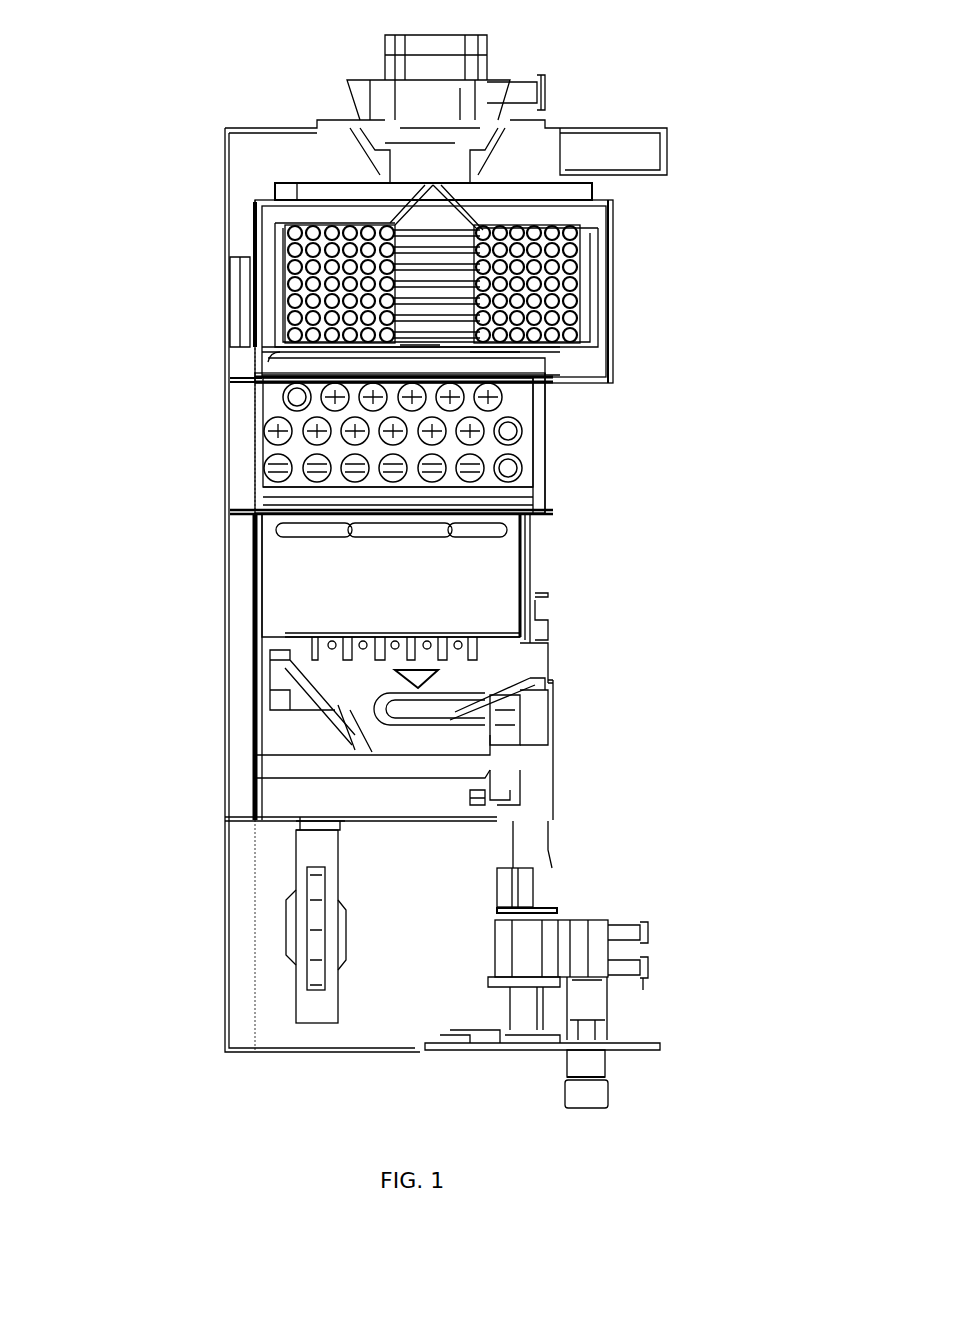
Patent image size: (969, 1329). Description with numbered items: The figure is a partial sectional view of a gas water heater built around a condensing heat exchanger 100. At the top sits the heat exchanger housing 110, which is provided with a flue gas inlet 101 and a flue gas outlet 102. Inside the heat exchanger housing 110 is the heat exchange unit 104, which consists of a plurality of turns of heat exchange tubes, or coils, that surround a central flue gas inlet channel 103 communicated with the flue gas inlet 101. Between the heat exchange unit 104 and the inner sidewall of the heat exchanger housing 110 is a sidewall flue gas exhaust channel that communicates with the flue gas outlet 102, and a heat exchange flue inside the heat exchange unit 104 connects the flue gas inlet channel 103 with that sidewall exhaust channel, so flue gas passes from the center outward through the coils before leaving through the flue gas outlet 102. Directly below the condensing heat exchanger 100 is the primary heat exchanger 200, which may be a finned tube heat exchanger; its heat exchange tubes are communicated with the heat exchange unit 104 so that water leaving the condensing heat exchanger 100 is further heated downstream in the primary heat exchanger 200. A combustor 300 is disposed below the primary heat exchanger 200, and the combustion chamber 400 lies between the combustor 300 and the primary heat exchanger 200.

The condensing heat exchanger 100 is at (438, 298).
The flue gas inlet 101 is at (433, 342).
The flue gas outlet 102 is at (455, 152).
The flue gas inlet channel 103 is at (433, 295).
The heat exchange unit 104 is at (287, 272).
The heat exchanger housing 110 is at (612, 225).
The primary heat exchanger 200 is at (293, 449).
The combustor 300 is at (325, 662).
The combustion chamber 400 is at (325, 583).